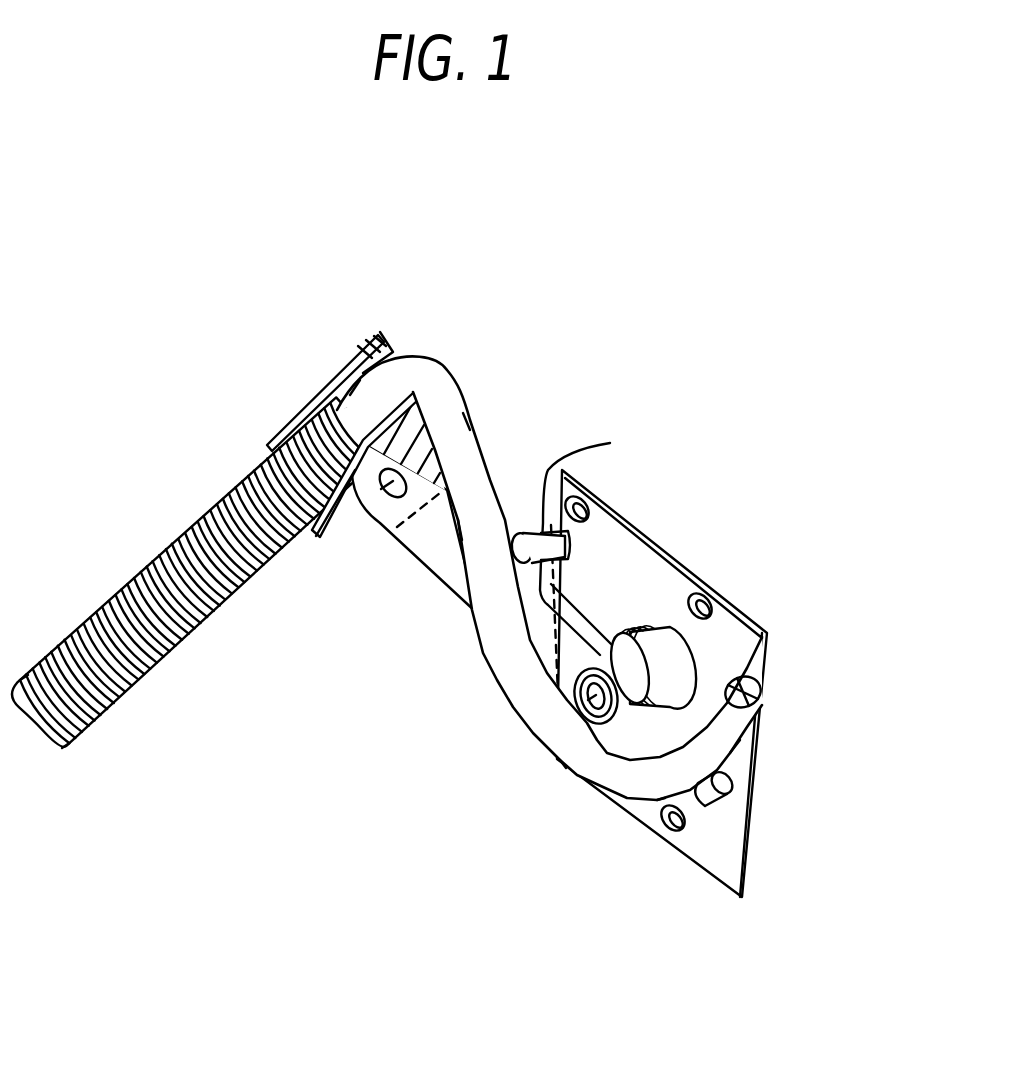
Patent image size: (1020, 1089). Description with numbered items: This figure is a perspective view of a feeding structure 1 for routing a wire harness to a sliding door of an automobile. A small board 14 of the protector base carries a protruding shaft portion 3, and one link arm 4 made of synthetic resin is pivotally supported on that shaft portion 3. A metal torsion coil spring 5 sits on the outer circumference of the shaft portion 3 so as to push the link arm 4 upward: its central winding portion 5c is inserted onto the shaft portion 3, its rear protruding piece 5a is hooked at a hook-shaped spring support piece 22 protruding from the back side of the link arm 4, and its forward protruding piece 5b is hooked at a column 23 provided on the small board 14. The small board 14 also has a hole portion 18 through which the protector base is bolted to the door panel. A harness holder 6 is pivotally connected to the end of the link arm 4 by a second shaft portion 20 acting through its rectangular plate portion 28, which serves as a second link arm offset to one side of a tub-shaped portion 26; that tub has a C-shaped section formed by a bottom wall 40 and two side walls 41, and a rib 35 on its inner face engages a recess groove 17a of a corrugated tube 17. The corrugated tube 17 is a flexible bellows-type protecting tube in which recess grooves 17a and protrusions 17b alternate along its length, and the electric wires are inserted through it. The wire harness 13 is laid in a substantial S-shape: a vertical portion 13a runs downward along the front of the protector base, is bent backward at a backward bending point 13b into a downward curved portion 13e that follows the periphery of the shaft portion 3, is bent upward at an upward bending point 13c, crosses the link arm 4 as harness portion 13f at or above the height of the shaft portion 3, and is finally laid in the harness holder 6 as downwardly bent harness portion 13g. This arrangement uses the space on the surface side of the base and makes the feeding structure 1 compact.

The feeding structure 1 is at (598, 291).
The shaft portion 3 is at (590, 707).
The link arm 4 is at (411, 559).
The torsion coil spring 5 is at (681, 627).
The protruding piece 5a is at (580, 588).
The protruding piece 5b is at (767, 637).
The winding portion 5c is at (640, 622).
The harness holder 6 is at (349, 433).
The wire harness 13 is at (603, 565).
The vertical portion 13a is at (740, 733).
The backward bending point 13b is at (667, 773).
The upward bending point 13c is at (432, 373).
The downward curved portion 13e is at (573, 763).
The harness portion 13f is at (473, 542).
The harness portion 13g is at (388, 390).
The small board 14 is at (659, 730).
The corrugated tube 17 is at (220, 625).
The recess grooves 17a is at (82, 734).
The protrusions 17b is at (77, 748).
The hole portion 18 is at (657, 840).
The shaft portion 20 is at (390, 500).
The spring support piece 22 is at (598, 533).
The column 23 is at (735, 796).
The tub-shaped portion 26 is at (348, 512).
The plate portion 28 is at (460, 443).
The rib 35 is at (350, 343).
The bottom wall 40 is at (387, 350).
The side walls 41 is at (322, 372).